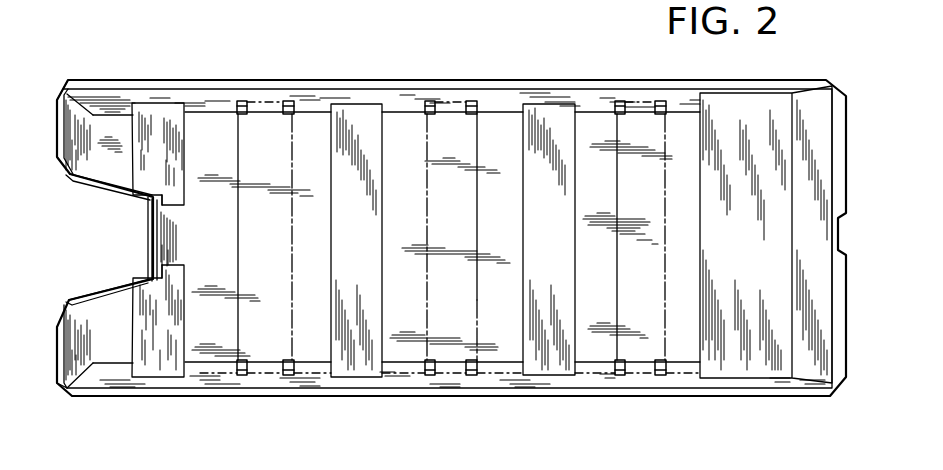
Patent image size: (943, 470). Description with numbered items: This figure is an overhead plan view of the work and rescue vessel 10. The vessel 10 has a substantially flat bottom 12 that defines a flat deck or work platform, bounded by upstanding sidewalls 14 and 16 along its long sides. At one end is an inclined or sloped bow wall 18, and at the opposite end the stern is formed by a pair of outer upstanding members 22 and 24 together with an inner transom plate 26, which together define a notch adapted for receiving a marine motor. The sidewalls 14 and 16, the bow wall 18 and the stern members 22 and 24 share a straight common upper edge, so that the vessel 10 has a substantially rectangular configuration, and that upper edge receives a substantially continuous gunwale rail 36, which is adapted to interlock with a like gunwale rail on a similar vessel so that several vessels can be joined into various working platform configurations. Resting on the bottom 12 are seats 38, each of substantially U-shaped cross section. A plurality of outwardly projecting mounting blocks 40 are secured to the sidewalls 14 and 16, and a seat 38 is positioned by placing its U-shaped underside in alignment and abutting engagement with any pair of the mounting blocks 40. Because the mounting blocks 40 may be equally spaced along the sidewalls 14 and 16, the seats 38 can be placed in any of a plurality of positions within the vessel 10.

The vessel 10 is at (174, 61).
The bottom 12 is at (310, 127).
The sidewall 14 is at (510, 98).
The sidewall 16 is at (403, 376).
The bow wall 18 is at (818, 193).
The outer upstanding member 22 is at (72, 179).
The outer upstanding member 24 is at (77, 314).
The inner transom plate 26 is at (160, 241).
The gunwale rail 36 is at (634, 80).
The seat 38 is at (528, 193).
The mounting block 40 is at (470, 100).